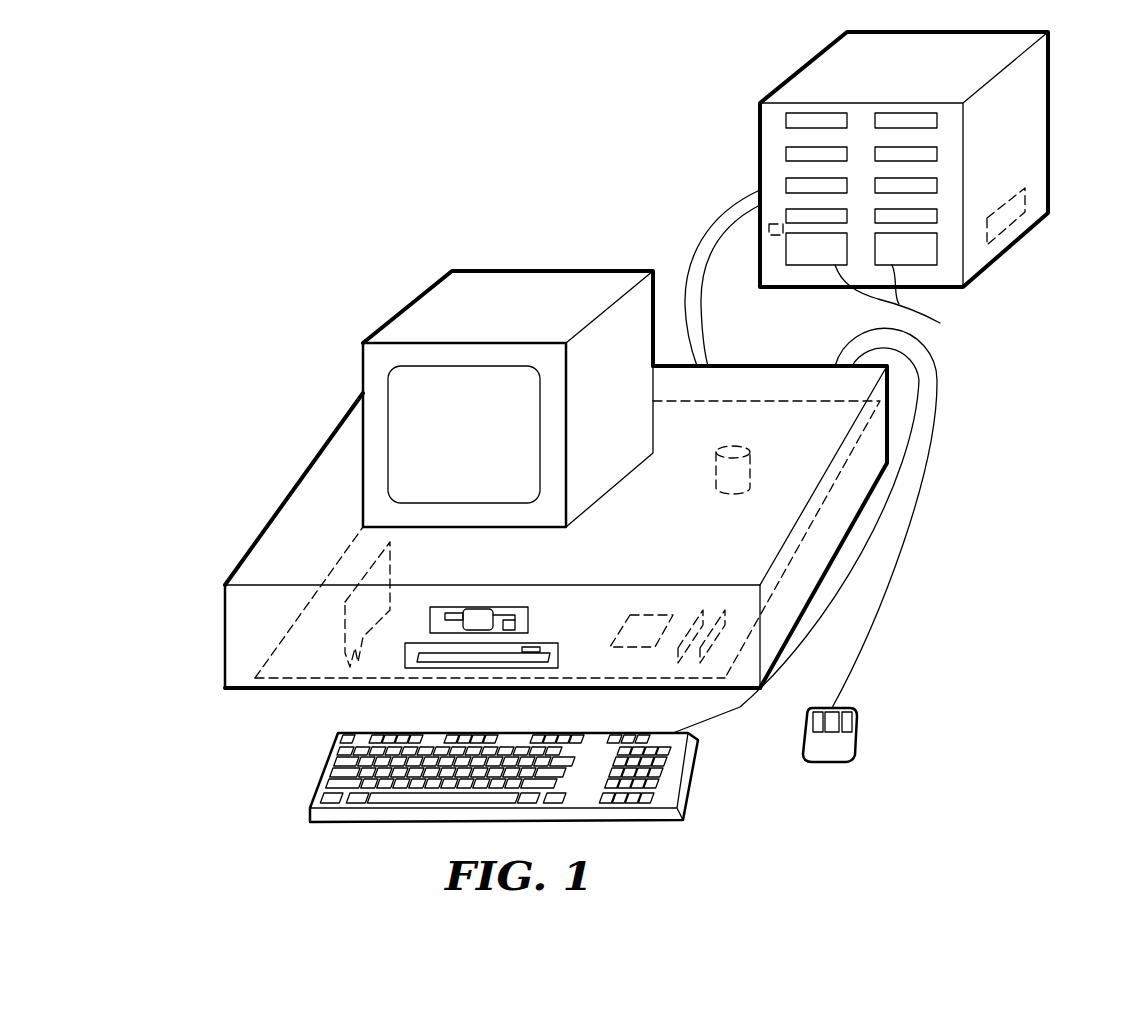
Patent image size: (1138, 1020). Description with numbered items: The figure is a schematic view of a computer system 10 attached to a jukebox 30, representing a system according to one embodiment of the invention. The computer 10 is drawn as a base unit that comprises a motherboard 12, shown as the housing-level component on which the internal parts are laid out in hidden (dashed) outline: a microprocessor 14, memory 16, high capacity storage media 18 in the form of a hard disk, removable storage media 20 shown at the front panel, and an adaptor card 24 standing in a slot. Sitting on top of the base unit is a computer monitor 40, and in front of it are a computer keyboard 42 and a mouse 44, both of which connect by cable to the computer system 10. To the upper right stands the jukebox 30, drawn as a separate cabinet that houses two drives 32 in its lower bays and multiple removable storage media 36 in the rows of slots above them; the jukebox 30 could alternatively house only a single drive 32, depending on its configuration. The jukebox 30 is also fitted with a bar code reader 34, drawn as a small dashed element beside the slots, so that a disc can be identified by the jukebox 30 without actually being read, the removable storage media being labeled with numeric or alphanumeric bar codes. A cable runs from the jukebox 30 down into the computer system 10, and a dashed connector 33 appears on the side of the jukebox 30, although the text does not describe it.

The computer system 10 is at (293, 506).
The motherboard 12 is at (276, 664).
The microprocessor 14 is at (637, 644).
The memory 16 is at (703, 638).
The high capacity storage media 18 is at (733, 446).
The removable storage media 20 is at (372, 673).
The adaptor card 24 is at (352, 620).
The jukebox 30 is at (1037, 96).
The drives 32 is at (902, 305).
The connector 33 is at (1000, 228).
The bar code reader 34 is at (768, 233).
The removable storage media 36 is at (786, 155).
The computer monitor 40 is at (520, 282).
The computer keyboard 42 is at (690, 772).
The mouse 44 is at (830, 752).